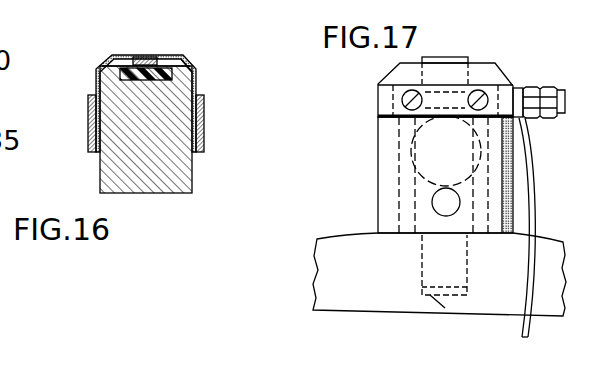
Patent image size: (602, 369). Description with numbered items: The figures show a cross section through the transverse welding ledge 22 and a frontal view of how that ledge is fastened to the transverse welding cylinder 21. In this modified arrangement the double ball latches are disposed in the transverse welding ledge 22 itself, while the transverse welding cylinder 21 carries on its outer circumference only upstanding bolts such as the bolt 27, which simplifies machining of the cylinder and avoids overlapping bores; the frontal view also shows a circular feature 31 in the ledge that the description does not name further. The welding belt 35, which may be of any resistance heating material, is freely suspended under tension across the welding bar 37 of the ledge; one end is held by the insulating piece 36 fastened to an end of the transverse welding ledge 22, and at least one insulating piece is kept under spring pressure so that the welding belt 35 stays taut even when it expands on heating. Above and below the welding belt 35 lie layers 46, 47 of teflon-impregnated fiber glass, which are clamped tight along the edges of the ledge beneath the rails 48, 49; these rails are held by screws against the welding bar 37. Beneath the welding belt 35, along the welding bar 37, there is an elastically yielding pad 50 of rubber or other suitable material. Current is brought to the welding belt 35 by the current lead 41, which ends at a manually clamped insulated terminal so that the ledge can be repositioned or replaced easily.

In FIG. 17, the transverse welding cylinder 21 is at (547, 239).
In FIG. 16, the transverse welding ledge 22 is at (198, 70).
In FIG. 17, the transverse welding ledge 22 is at (504, 74).
In FIG. 17, the upstanding bolt 27 is at (437, 234).
In FIG. 17, the bore 31 is at (433, 152).
In FIG. 16, the welding belt 35 is at (147, 57).
In FIG. 17, the welding belt 35 is at (461, 58).
In FIG. 17, the insulating piece 36 is at (392, 190).
In FIG. 16, the welding bar 37 is at (148, 181).
In FIG. 17, the current lead 41 is at (529, 188).
In FIG. 16, the layer of teflon-impregnated fiber glass 46 is at (127, 50).
In FIG. 16, the layer of teflon-impregnated fiber glass 47 is at (189, 63).
In FIG. 16, the rail 48 is at (90, 153).
In FIG. 17, the rail 48 is at (398, 143).
In FIG. 16, the rail 49 is at (208, 131).
In FIG. 17, the rail 49 is at (498, 147).
In FIG. 16, the elastically yielding pad 50 is at (112, 58).